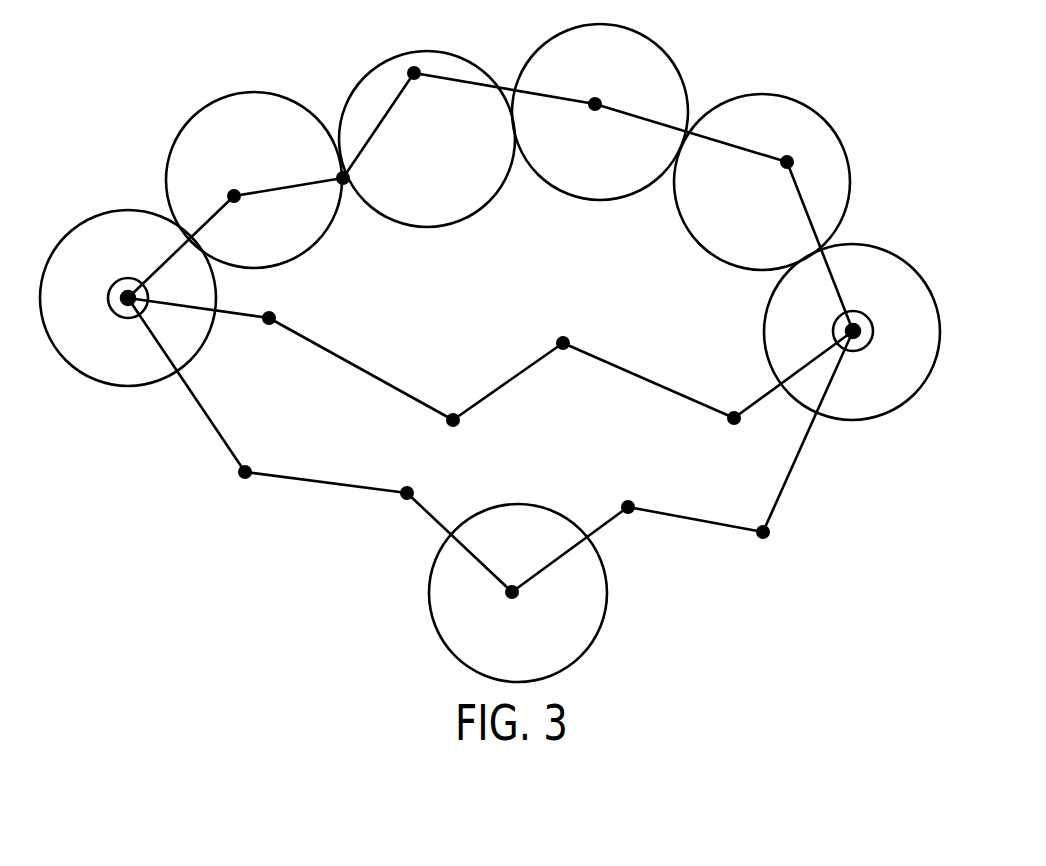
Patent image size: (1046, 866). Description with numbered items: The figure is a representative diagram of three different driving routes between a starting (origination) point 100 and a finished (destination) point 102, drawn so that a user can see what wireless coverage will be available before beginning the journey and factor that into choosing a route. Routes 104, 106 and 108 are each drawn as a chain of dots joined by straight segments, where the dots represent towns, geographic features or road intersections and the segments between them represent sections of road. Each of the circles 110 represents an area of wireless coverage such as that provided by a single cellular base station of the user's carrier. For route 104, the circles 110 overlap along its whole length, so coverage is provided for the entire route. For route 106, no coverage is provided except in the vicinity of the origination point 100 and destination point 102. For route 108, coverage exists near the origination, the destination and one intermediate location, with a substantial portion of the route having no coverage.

The starting point 100 is at (116, 278).
The finish point 102 is at (876, 320).
The first route 104 is at (457, 82).
The second route 106 is at (365, 372).
The third route 108 is at (347, 490).
The circles 110 is at (256, 92).